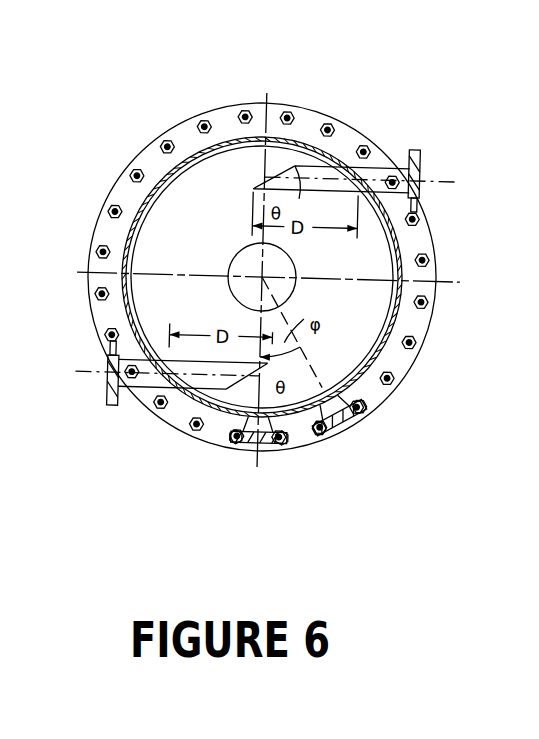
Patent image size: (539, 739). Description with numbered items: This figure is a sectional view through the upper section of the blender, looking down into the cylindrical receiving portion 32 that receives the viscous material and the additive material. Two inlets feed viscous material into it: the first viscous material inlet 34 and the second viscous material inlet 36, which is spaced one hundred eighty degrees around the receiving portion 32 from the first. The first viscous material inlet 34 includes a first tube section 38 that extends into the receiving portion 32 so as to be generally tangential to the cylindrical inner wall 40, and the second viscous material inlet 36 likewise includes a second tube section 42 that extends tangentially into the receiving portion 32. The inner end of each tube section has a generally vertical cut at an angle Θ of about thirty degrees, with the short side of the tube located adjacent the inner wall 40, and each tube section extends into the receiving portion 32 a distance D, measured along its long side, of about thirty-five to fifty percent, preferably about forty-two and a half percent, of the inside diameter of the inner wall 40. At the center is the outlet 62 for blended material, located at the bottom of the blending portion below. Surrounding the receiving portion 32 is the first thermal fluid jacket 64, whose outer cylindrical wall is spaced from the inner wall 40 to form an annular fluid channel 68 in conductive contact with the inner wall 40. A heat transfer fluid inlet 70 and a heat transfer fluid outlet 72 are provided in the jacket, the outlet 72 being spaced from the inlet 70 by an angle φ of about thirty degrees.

The cylindrical receiving portion 32 is at (188, 202).
The first viscous material inlet 34 is at (423, 177).
The second viscous material inlet 36 is at (102, 383).
The first tube section 38 is at (377, 162).
The inner wall 40 is at (153, 304).
The second tube section 42 is at (147, 391).
The outlet 62 is at (295, 287).
The first thermal fluid jacket 64 is at (302, 131).
The annular fluid channel 68 is at (229, 137).
The heat transfer fluid inlet 70 is at (348, 437).
The heat transfer fluid outlet 72 is at (251, 446).